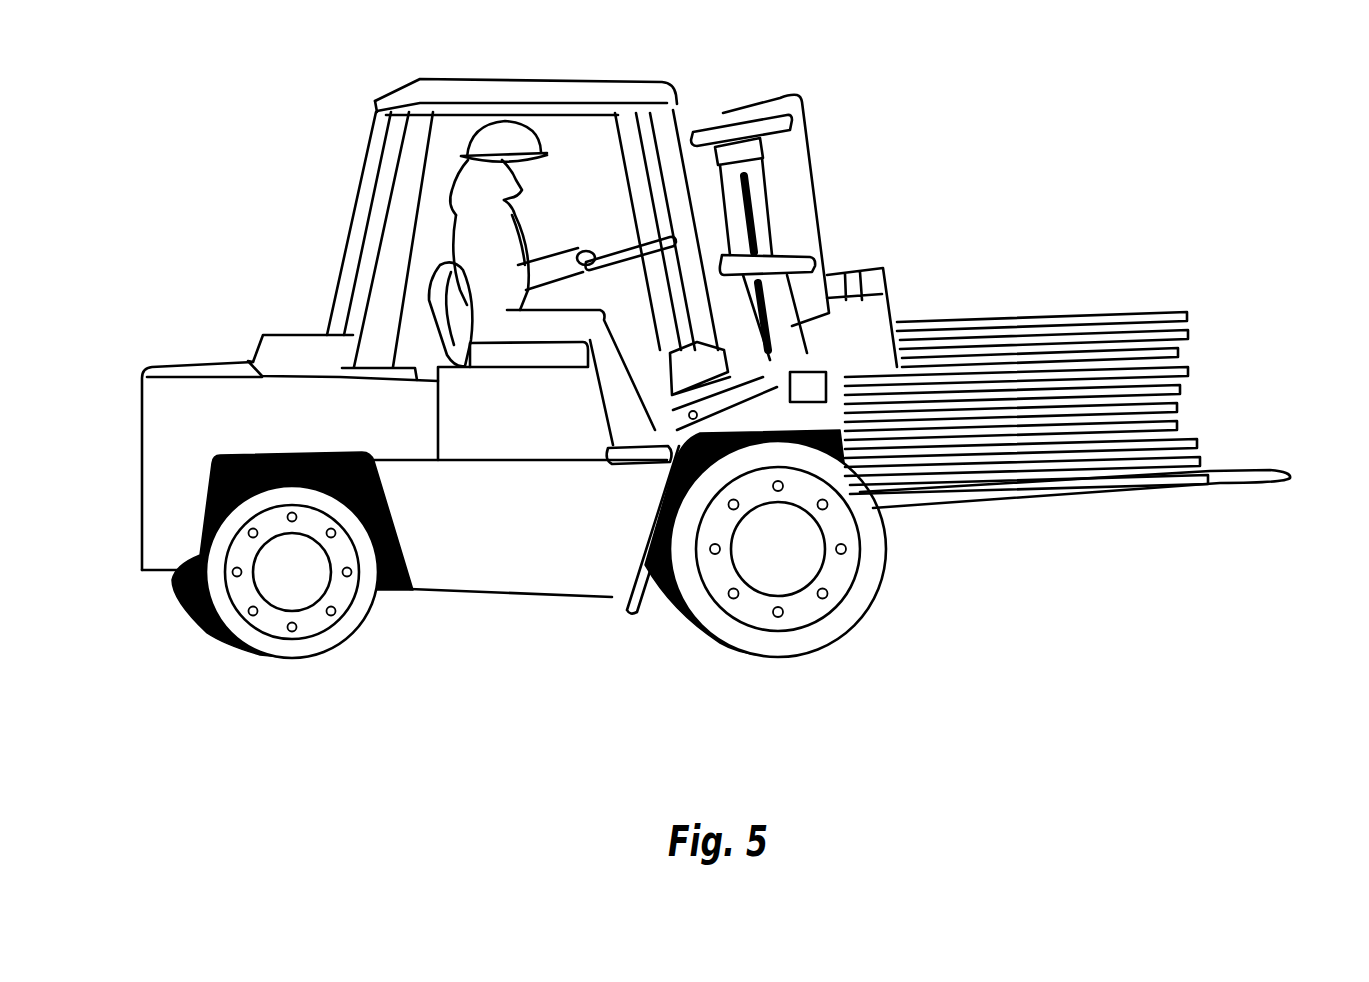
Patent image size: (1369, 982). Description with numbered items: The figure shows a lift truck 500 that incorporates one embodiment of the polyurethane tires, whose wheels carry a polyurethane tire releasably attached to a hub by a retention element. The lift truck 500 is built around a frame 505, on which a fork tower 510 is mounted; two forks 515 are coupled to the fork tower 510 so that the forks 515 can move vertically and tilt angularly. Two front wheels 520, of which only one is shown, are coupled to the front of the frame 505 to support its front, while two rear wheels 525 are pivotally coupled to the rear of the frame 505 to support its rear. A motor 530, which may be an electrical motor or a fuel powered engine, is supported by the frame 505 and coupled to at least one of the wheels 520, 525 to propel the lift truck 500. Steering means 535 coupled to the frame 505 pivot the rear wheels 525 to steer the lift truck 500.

The lift truck 500 is at (709, 372).
The frame 505 is at (141, 447).
The fork tower 510 is at (787, 155).
The forks 515 is at (1248, 468).
The front wheels 520 is at (780, 657).
The rear wheels 525 is at (291, 658).
The motor 530 is at (505, 427).
The steering means 535 is at (627, 247).